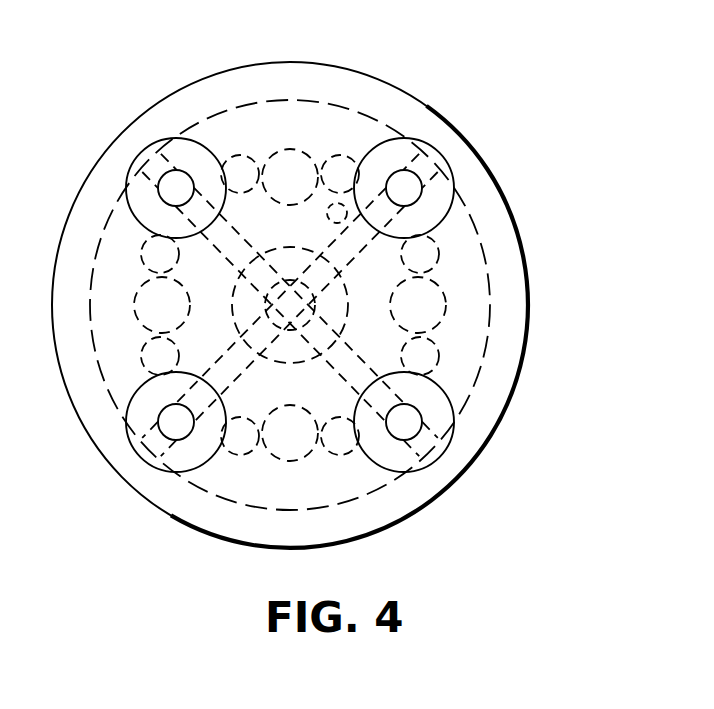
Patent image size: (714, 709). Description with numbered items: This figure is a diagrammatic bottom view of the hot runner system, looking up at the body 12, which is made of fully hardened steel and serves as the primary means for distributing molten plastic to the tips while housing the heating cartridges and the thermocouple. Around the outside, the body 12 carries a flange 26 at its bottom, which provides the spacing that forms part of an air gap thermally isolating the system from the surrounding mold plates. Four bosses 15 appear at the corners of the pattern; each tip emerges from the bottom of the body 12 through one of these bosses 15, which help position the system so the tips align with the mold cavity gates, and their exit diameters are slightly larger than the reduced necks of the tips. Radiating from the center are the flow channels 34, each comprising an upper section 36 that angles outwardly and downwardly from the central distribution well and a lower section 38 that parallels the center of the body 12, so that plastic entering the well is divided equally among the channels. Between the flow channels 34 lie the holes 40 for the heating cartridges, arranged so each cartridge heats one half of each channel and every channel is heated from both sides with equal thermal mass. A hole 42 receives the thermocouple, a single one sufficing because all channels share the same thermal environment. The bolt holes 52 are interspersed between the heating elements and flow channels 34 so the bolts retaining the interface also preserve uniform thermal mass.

The body 12 is at (540, 337).
The bosses 15 is at (143, 150).
The flange 26 is at (260, 78).
The flow channel 34 is at (310, 305).
The upper section 36 is at (255, 257).
The lower section 38 is at (161, 184).
The holes 40 is at (273, 149).
The hole 42 is at (327, 216).
The holes 52 is at (249, 152).